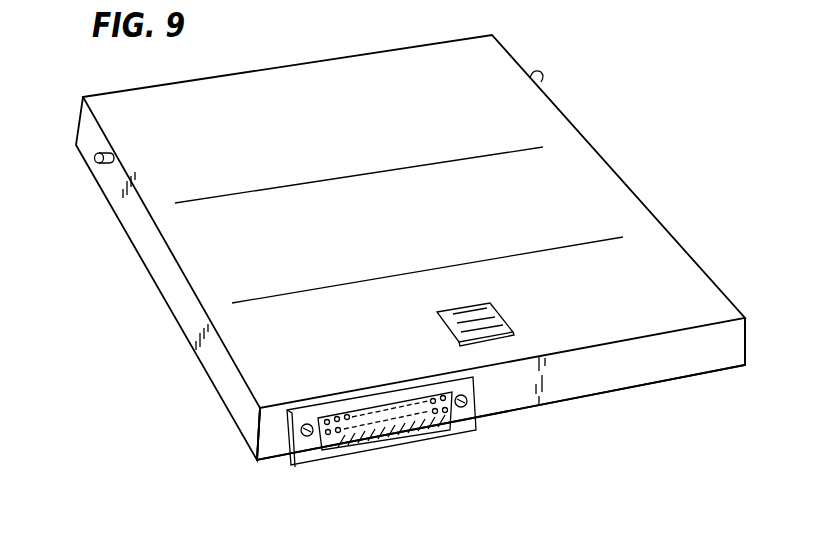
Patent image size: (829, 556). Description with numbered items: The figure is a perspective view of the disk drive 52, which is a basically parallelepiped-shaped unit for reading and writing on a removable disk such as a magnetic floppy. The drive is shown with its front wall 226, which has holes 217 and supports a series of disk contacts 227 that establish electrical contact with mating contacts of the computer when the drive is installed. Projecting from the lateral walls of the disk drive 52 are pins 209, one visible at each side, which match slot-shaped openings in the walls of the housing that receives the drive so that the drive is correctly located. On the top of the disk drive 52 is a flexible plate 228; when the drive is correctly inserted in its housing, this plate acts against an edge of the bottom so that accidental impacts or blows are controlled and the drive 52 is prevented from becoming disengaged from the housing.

The disk drive 52 is at (583, 178).
The pin 209 is at (95, 159).
The front wall 226 is at (682, 363).
The flexible plate 228 is at (500, 317).
The holes 217 is at (461, 407).
The disk contacts 227 is at (440, 396).